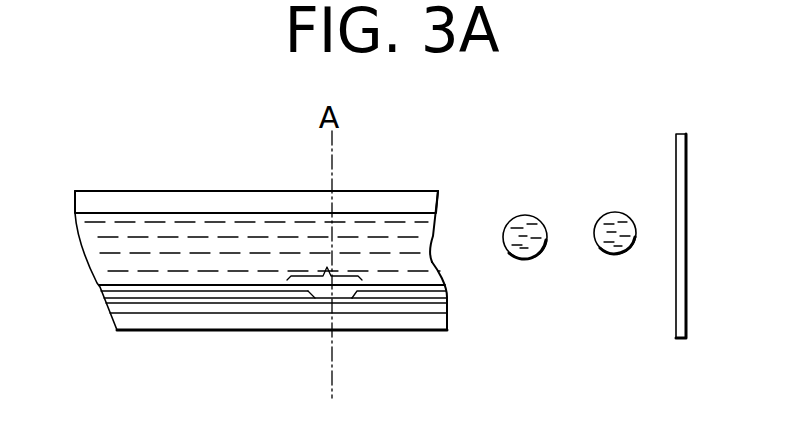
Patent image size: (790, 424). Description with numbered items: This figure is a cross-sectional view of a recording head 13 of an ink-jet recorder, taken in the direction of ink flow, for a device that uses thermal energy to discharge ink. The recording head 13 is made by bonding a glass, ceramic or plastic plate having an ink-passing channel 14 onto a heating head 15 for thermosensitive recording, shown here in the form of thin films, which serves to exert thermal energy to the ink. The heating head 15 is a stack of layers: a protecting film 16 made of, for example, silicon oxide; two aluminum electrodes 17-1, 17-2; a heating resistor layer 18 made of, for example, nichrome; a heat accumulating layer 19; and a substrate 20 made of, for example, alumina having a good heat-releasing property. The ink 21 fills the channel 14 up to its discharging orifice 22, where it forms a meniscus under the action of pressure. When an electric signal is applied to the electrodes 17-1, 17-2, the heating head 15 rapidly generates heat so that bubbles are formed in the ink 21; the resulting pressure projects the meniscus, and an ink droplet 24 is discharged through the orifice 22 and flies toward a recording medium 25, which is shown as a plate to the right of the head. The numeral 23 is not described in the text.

The recording head 13 is at (229, 190).
The ink-passing channel 14 is at (271, 213).
The heating head 15 is at (82, 286).
The protecting film 16 is at (166, 291).
The aluminum electrode 17-1 is at (219, 295).
The aluminum electrode 17-2 is at (408, 307).
The heating resistor layer 18 is at (268, 303).
The heat accumulating layer 19 is at (305, 309).
The substrate 20 is at (373, 320).
The ink 21 is at (132, 215).
The discharging orifice 22 is at (443, 252).
The upper side edge 23 is at (442, 240).
The ink droplet 24 is at (638, 214).
The recording medium 25 is at (675, 145).